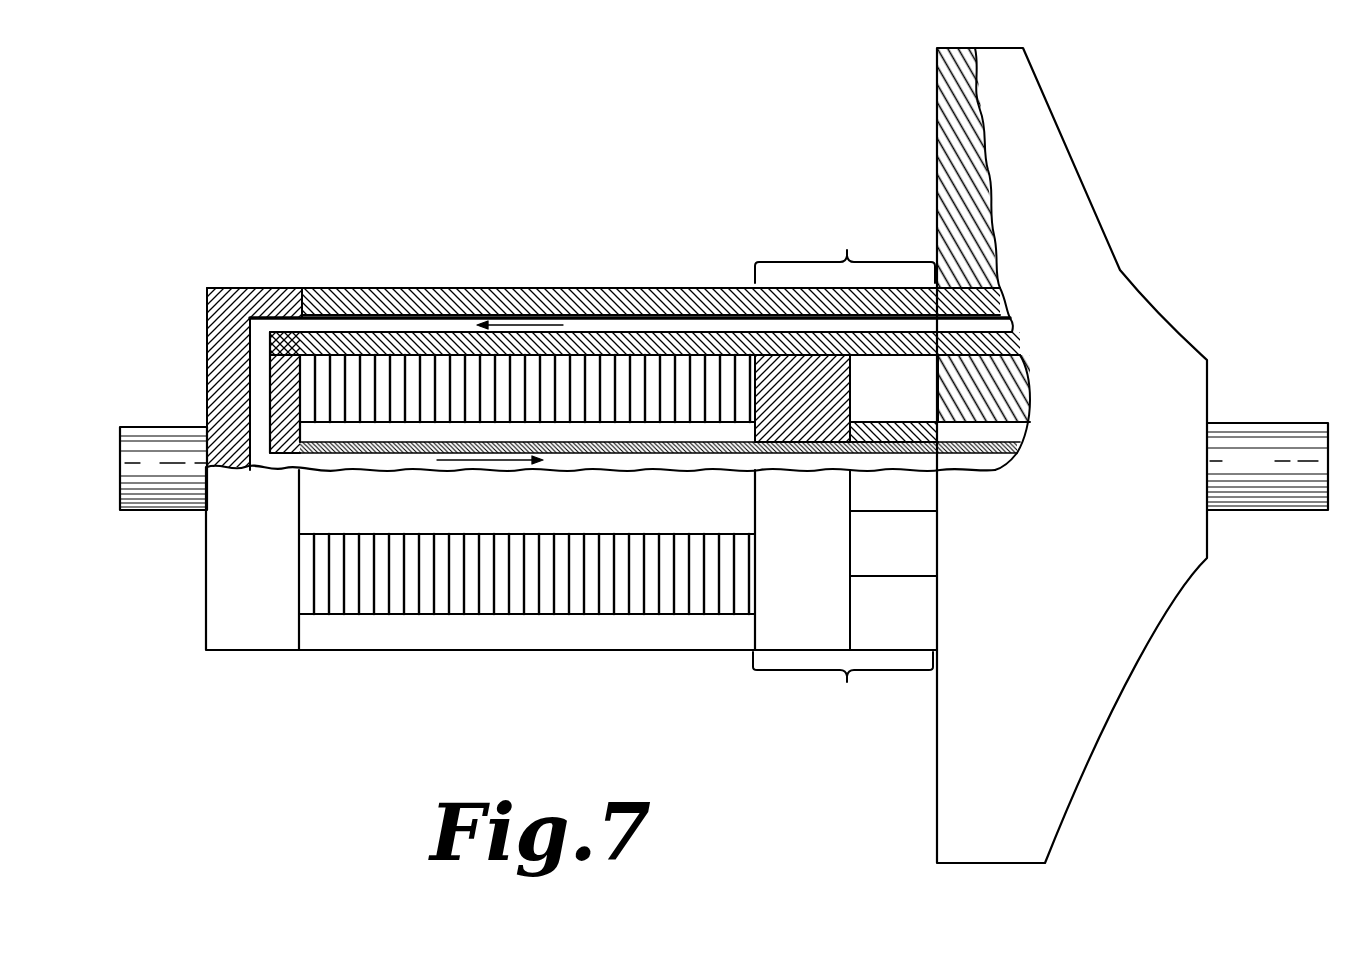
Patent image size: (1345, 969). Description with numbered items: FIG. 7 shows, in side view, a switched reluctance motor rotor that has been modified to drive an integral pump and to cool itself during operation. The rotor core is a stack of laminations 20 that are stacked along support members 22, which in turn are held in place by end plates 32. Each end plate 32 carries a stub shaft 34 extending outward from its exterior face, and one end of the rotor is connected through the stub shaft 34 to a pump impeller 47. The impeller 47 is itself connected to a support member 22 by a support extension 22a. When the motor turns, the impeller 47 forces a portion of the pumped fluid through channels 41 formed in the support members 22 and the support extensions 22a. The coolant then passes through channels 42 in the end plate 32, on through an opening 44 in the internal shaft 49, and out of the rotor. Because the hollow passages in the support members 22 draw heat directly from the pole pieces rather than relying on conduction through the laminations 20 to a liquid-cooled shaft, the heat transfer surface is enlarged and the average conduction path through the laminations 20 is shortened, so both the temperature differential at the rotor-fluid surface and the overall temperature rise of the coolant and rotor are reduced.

The stack of laminations 20 is at (307, 678).
The support member 22 is at (537, 288).
The support extension 22a is at (845, 472).
The end plate 32 is at (217, 557).
The stub shaft 34 is at (143, 432).
The channel 41 is at (430, 324).
The channel 42 is at (260, 348).
The opening 44 is at (633, 462).
The pump impeller 47 is at (1078, 205).
The internal shaft 49 is at (337, 443).